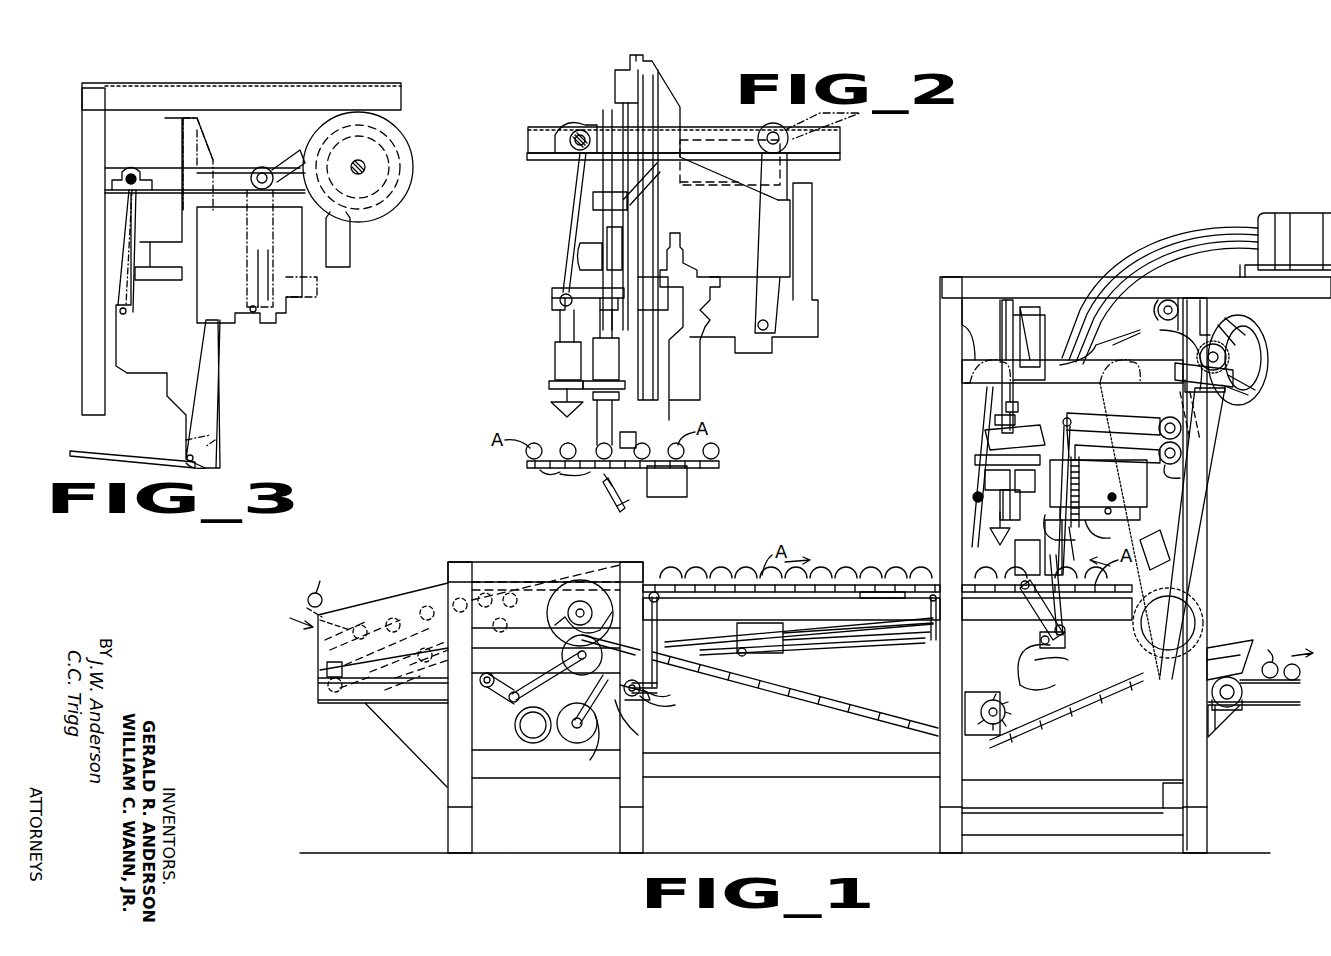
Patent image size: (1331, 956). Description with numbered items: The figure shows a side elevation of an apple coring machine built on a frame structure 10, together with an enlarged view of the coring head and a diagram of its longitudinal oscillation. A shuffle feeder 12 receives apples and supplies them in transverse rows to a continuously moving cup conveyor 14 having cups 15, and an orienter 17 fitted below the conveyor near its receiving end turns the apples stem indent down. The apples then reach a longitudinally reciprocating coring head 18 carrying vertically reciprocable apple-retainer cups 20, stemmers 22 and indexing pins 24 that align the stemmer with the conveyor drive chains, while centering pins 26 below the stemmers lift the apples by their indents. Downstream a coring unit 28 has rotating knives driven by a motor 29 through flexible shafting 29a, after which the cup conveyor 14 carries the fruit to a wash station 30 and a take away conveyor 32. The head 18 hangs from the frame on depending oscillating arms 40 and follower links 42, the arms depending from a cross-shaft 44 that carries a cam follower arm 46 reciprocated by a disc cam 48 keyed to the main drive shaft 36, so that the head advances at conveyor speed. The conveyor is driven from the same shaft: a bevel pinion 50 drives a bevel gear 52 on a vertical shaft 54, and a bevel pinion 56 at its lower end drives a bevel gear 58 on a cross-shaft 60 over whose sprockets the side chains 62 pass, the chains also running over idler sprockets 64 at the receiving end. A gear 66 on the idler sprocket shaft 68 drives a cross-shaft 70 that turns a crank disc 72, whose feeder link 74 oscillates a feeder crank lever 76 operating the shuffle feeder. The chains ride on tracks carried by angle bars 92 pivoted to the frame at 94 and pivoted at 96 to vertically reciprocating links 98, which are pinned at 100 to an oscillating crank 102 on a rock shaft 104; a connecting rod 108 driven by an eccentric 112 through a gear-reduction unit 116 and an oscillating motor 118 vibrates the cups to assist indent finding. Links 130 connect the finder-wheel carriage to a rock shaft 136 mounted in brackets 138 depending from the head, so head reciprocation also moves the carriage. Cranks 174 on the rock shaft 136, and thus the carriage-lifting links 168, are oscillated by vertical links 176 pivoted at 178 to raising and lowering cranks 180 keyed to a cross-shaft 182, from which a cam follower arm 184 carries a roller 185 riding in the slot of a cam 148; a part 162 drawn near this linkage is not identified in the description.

In FIG. 1, the frame structure 10 is at (437, 802).
In FIG. 2, the frame structure 10 is at (853, 151).
In FIG. 3, the frame structure 10 is at (76, 106).
In FIG. 1, the shuffle feeder 12 is at (304, 632).
In FIG. 1, the cup conveyor 14 is at (696, 574).
In FIG. 2, the cup conveyor 14 is at (732, 462).
In FIG. 1, the cups 15 is at (1040, 748).
In FIG. 2, the cups 15 is at (560, 472).
In FIG. 1, the orienter 17 is at (750, 565).
In FIG. 1, the coring head 18 is at (958, 474).
In FIG. 2, the coring head 18 is at (536, 293).
In FIG. 3, the coring head 18 is at (222, 366).
In FIG. 1, the apple-retainer cups 20 is at (990, 532).
In FIG. 2, the apple-retainer cups 20 is at (560, 404).
In FIG. 1, the stemmers 22 is at (1000, 508).
In FIG. 2, the stemmers 22 is at (600, 360).
In FIG. 1, the indexing pins 24 is at (1020, 560).
In FIG. 2, the indexing pins 24 is at (622, 435).
In FIG. 1, the centering pins 26 is at (1020, 592).
In FIG. 2, the centering pins 26 is at (606, 490).
In FIG. 1, the coring unit 28 is at (1168, 545).
In FIG. 2, the coring unit 28 is at (700, 370).
In FIG. 1, the motor 29 is at (1306, 218).
In FIG. 1, the flexible shafting 29a is at (1148, 262).
In FIG. 1, the wash station 30 is at (1098, 557).
In FIG. 1, the take away conveyor 32 is at (1290, 705).
In FIG. 1, the main drive shaft 36 is at (1235, 357).
In FIG. 3, the main drive shaft 36 is at (368, 167).
In FIG. 1, the oscillating arms 40 is at (1115, 390).
In FIG. 2, the oscillating arms 40 is at (783, 174).
In FIG. 3, the oscillating arms 40 is at (300, 290).
In FIG. 1, the follower links 42 is at (985, 397).
In FIG. 2, the follower links 42 is at (578, 186).
In FIG. 3, the follower links 42 is at (122, 290).
In FIG. 3, the cross-shaft 44 is at (256, 170).
In FIG. 1, the cam follower arm 46 is at (1140, 355).
In FIG. 2, the cam follower arm 46 is at (860, 120).
In FIG. 3, the cam follower arm 46 is at (290, 162).
In FIG. 3, the disc cam 48 is at (402, 130).
In FIG. 1, the bevel pinion 50 is at (1245, 340).
In FIG. 1, the bevel gear 52 is at (1240, 390).
In FIG. 1, the vertical shaft 54 is at (1190, 558).
In FIG. 1, the bevel pinion 56 is at (1210, 690).
In FIG. 1, the bevel gear 58 is at (1195, 598).
In FIG. 1, the cross-shaft 60 is at (1225, 625).
In FIG. 1, the side chains 62 is at (840, 580).
In FIG. 1, the idler sprockets 64 is at (608, 585).
In FIG. 1, the gear 66 is at (583, 585).
In FIG. 1, the idler sprocket shaft 68 is at (580, 608).
In FIG. 1, the cross-shaft 70 is at (568, 642).
In FIG. 1, the crank disc 72 is at (590, 672).
In FIG. 1, the feeder link 74 is at (515, 722).
In FIG. 1, the feeder crank lever 76 is at (518, 688).
In FIG. 1, the angle bars 92 is at (880, 590).
In FIG. 1, the pivot 94 is at (933, 640).
In FIG. 1, the pivot 96 is at (655, 592).
In FIG. 1, the vertically reciprocating links 98 is at (660, 685).
In FIG. 1, the pin 100 is at (672, 695).
In FIG. 1, the oscillating crank 102 is at (676, 706).
In FIG. 1, the rock shaft 104 is at (632, 700).
In FIG. 1, the connecting rod 108 is at (620, 710).
In FIG. 1, the eccentric 112 is at (577, 730).
In FIG. 1, the gear-reduction unit 116 is at (595, 760).
In FIG. 1, the oscillating motor 118 is at (533, 730).
In FIG. 1, the carriage-reciprocating links 130 is at (882, 645).
In FIG. 3, the carriage-reciprocating links 130 is at (118, 450).
In FIG. 1, the rock shaft 136 is at (1040, 692).
In FIG. 3, the rock shaft 136 is at (200, 468).
In FIG. 1, the mounting brackets 138 is at (1060, 600).
In FIG. 2, the mounting brackets 138 is at (688, 490).
In FIG. 3, the mounting brackets 138 is at (190, 440).
In FIG. 1, the cam 148 is at (1240, 318).
In FIG. 1, the cylinder 162 is at (790, 664).
In FIG. 1, the carriage-lifting links 168 is at (850, 650).
In FIG. 1, the cranks 174 is at (1050, 660).
In FIG. 1, the vertical links 176 is at (1066, 622).
In FIG. 1, the pivot 178 is at (1060, 432).
In FIG. 1, the raising and lowering cranks 180 is at (1180, 473).
In FIG. 1, the cross-shaft 182 is at (1182, 430).
In FIG. 1, the cam follower arm 184 is at (1235, 405).
In FIG. 1, the roller 185 is at (1262, 378).